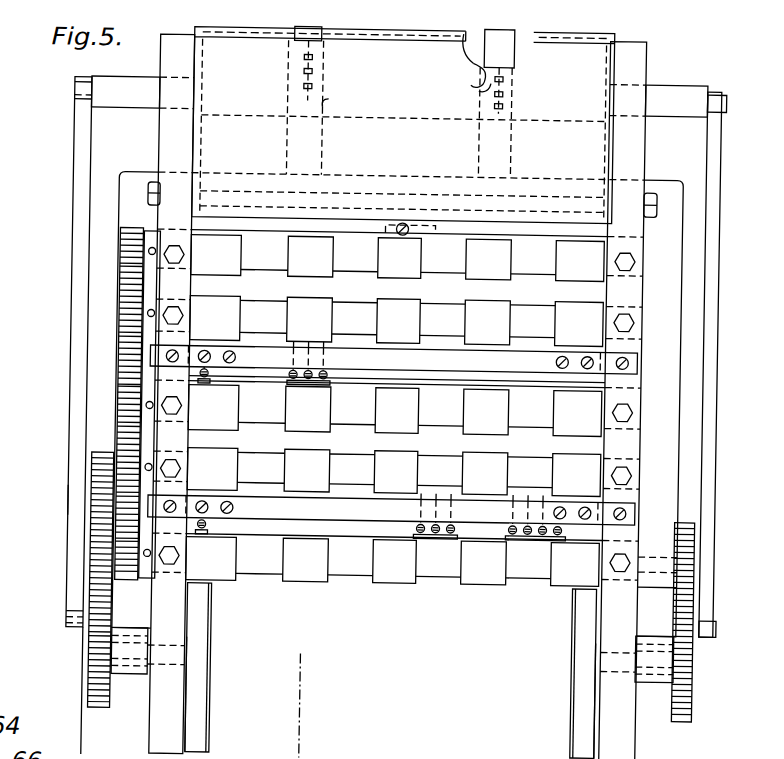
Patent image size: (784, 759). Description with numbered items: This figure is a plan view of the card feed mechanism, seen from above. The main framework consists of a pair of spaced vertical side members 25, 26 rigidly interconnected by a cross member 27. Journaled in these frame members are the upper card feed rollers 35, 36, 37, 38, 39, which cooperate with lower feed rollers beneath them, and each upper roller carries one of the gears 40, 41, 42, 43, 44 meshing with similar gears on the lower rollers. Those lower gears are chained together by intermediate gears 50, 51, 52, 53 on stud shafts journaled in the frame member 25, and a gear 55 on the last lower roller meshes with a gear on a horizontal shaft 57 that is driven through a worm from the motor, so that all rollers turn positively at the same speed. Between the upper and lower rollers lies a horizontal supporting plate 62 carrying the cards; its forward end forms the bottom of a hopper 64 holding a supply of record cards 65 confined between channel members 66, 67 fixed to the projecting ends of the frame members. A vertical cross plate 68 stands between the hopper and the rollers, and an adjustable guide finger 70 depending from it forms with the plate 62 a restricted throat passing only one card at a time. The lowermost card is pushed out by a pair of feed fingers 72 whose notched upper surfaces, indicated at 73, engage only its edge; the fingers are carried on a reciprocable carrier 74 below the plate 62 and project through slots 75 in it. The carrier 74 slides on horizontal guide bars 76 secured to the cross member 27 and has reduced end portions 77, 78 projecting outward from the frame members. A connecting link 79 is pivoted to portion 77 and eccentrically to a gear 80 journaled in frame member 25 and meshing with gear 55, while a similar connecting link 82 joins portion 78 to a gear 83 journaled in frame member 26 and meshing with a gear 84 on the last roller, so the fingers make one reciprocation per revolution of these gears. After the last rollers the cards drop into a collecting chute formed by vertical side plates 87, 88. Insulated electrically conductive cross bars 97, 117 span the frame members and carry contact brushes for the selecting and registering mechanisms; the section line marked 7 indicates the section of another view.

The section line 7 is at (297, 28).
The frame member 25 is at (170, 632).
The frame member 26 is at (608, 625).
The cross member 27 is at (362, 158).
The upper card feed roller 35 is at (318, 279).
The upper card feed roller 36 is at (403, 311).
The upper card feed roller 37 is at (303, 426).
The upper card feed roller 38 is at (395, 462).
The upper card feed roller 39 is at (395, 575).
The gear 40 is at (133, 242).
The gear 41 is at (128, 318).
The gear 42 is at (128, 411).
The gear 43 is at (120, 477).
The gear 44 is at (118, 567).
The intermediate gear 50 is at (128, 283).
The intermediate gear 51 is at (128, 360).
The intermediate gear 52 is at (125, 448).
The intermediate gear 53 is at (140, 522).
The gear 55 is at (105, 553).
The horizontal shaft 57 is at (62, 504).
The horizontal supporting plate 62 is at (585, 295).
The hopper 64 is at (617, 67).
The record cards 65 is at (402, 164).
The channel member 66 is at (189, 135).
The channel member 67 is at (607, 148).
The vertical cross plate 68 is at (455, 236).
The adjustable guide finger 70 is at (418, 237).
The feed finger 72 is at (322, 37).
The notch 73 is at (458, 45).
The reciprocable carrier 74 is at (468, 66).
The slot 75 is at (322, 107).
The horizontal guide bar 76 is at (228, 136).
The reduced end portion 77 is at (126, 76).
The reduced end portion 78 is at (676, 95).
The connecting link 79 is at (80, 178).
The gear 80 is at (103, 661).
The connecting link 82 is at (713, 364).
The gear 83 is at (680, 663).
The gear 84 is at (690, 562).
The vertical side plate 87 is at (190, 693).
The vertical side plate 88 is at (597, 690).
The cross bar 97 is at (476, 357).
The cross bar 117 is at (355, 515).